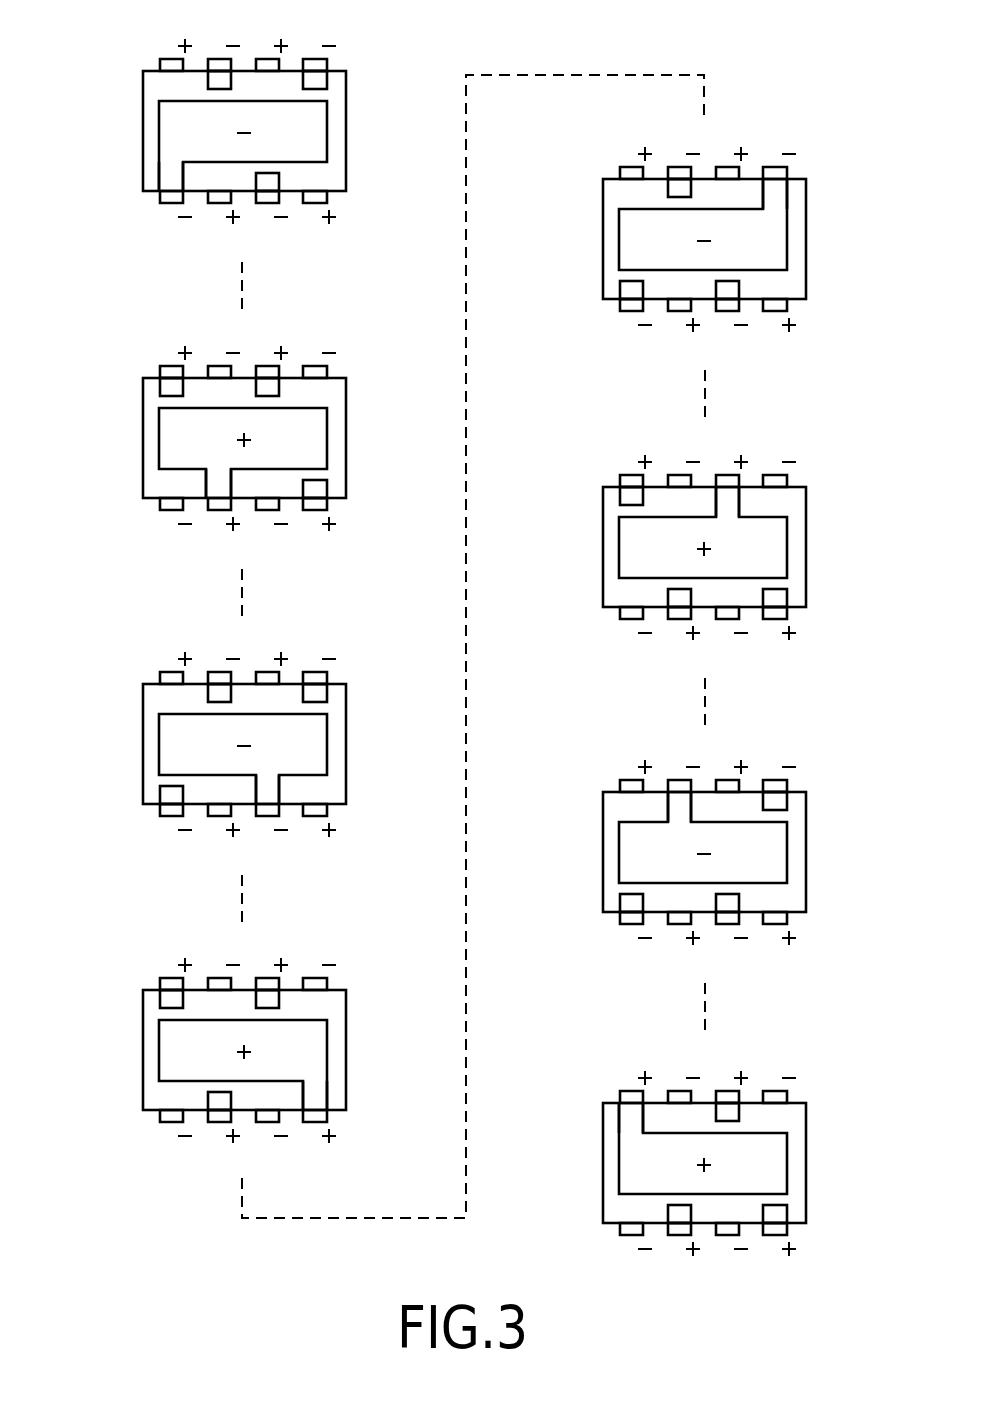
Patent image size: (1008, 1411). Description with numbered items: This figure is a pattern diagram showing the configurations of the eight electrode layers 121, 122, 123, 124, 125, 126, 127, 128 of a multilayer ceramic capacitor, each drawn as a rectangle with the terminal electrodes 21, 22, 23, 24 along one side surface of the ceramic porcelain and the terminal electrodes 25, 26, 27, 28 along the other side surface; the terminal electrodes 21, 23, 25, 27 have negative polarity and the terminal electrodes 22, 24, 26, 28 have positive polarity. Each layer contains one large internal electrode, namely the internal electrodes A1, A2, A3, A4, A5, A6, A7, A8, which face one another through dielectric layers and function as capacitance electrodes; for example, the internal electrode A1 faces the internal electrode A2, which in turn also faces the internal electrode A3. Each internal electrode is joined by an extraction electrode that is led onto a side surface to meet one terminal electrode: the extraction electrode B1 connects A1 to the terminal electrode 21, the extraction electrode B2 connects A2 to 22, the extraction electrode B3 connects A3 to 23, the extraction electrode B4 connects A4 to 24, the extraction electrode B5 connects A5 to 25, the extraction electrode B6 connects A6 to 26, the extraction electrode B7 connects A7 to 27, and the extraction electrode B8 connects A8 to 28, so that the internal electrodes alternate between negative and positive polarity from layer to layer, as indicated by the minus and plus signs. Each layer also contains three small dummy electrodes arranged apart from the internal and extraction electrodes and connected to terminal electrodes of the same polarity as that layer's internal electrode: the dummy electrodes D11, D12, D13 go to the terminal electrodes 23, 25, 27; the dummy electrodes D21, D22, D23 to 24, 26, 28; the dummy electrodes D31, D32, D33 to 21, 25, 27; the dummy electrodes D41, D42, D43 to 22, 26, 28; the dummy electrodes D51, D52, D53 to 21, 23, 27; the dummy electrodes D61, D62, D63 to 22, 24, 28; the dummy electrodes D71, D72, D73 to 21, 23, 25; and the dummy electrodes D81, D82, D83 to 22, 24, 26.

The terminal electrode 21 is at (626, 1264).
The terminal electrode 22 is at (674, 1264).
The terminal electrode 23 is at (722, 1264).
The terminal electrode 24 is at (769, 1264).
The terminal electrode 25 is at (777, 1094).
The terminal electrode 26 is at (730, 1094).
The terminal electrode 27 is at (682, 1094).
The terminal electrode 28 is at (634, 1094).
The electrode layer 121 is at (99, 147).
The electrode layer 122 is at (99, 447).
The electrode layer 123 is at (99, 754).
The electrode layer 124 is at (99, 1057).
The electrode layer 125 is at (559, 254).
The electrode layer 126 is at (559, 556).
The electrode layer 127 is at (559, 861).
The electrode layer 128 is at (559, 1176).
The internal electrode A1 is at (317, 129).
The internal electrode A2 is at (317, 437).
The internal electrode A3 is at (317, 742).
The internal electrode A4 is at (317, 1042).
The internal electrode A5 is at (775, 239).
The internal electrode A6 is at (780, 546).
The internal electrode A7 is at (780, 845).
The internal electrode A8 is at (778, 1158).
The extraction electrode B1 is at (172, 179).
The extraction electrode B2 is at (218, 485).
The extraction electrode B3 is at (267, 789).
The extraction electrode B4 is at (317, 1095).
The extraction electrode B5 is at (775, 192).
The extraction electrode B6 is at (730, 498).
The extraction electrode B7 is at (680, 804).
The extraction electrode B8 is at (632, 1116).
The dummy electrode D11 is at (267, 178).
The dummy electrode D12 is at (317, 82).
The dummy electrode D13 is at (213, 80).
The dummy electrode D21 is at (317, 483).
The dummy electrode D22 is at (267, 390).
The dummy electrode D23 is at (168, 391).
The dummy electrode D31 is at (168, 788).
The dummy electrode D32 is at (317, 695).
The dummy electrode D33 is at (213, 693).
The dummy electrode D41 is at (218, 1093).
The dummy electrode D42 is at (267, 996).
The dummy electrode D43 is at (168, 1001).
The dummy electrode D51 is at (632, 287).
The dummy electrode D52 is at (730, 286).
The dummy electrode D53 is at (678, 192).
The dummy electrode D61 is at (680, 593).
The dummy electrode D62 is at (777, 593).
The dummy electrode D63 is at (628, 499).
The dummy electrode D71 is at (628, 898).
The dummy electrode D72 is at (728, 898).
The dummy electrode D73 is at (777, 803).
The dummy electrode D81 is at (682, 1210).
The dummy electrode D82 is at (780, 1210).
The dummy electrode D83 is at (730, 1116).